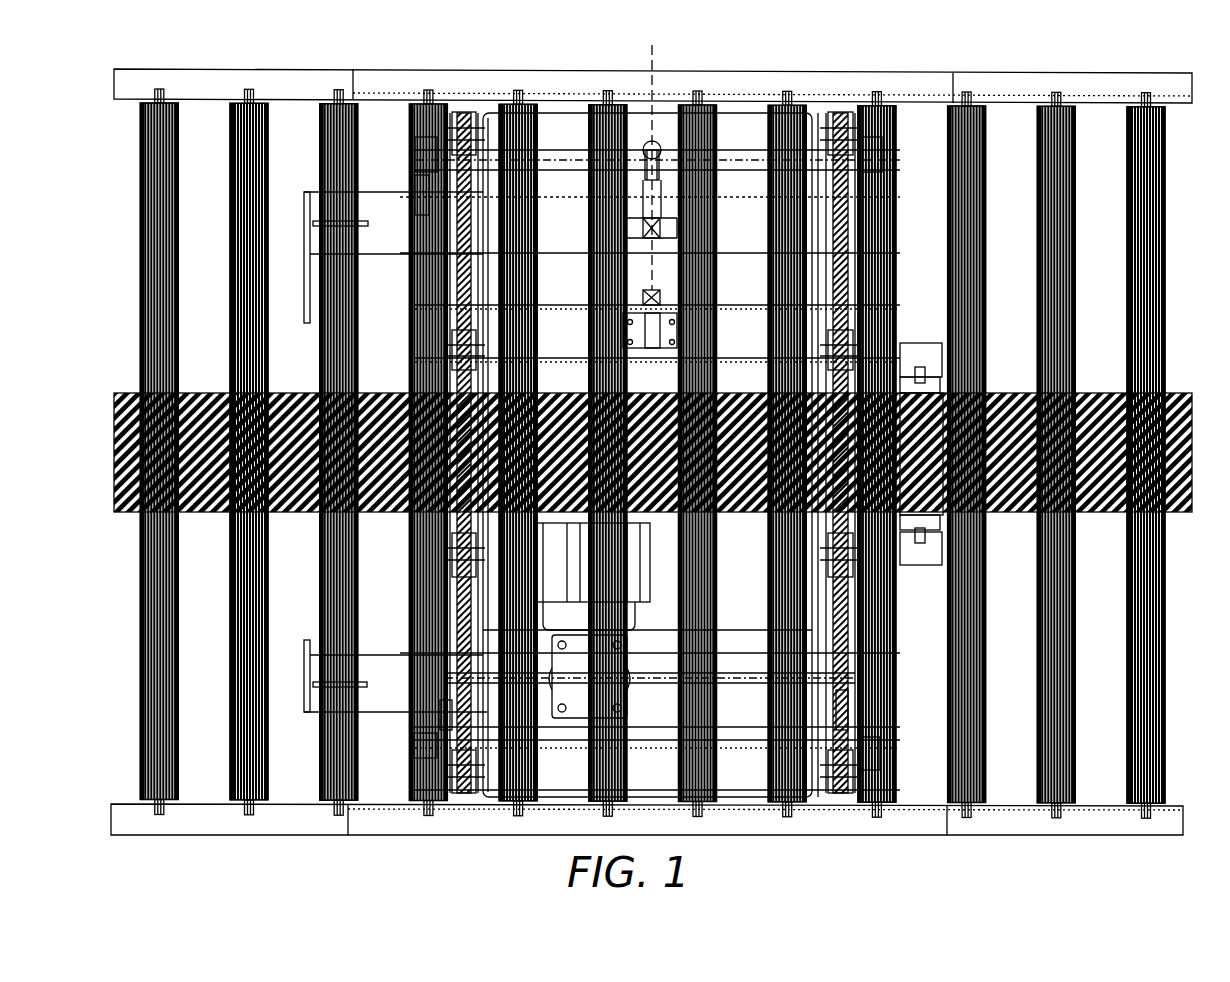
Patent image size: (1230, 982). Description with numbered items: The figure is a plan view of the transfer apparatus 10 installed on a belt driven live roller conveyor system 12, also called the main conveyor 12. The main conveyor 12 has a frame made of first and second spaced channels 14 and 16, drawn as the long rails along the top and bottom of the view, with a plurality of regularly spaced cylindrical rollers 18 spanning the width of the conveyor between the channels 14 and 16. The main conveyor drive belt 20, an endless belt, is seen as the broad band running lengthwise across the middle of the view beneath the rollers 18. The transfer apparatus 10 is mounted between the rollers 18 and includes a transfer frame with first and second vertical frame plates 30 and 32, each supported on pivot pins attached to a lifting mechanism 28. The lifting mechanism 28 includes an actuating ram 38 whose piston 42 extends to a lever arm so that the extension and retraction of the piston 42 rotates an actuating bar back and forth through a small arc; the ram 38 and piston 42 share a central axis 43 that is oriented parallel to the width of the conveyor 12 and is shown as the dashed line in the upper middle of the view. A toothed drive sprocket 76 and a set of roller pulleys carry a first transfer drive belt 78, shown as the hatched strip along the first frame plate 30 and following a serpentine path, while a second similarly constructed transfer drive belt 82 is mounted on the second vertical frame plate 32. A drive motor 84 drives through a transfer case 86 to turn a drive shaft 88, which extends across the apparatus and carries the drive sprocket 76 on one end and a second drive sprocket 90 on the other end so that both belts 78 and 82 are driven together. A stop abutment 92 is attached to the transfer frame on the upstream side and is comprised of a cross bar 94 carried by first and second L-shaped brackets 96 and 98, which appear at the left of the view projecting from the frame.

The transfer apparatus 10 is at (816, 113).
The belt driven live roller conveyor system 12 is at (655, 71).
The first channel 14 is at (1109, 70).
The second channel 16 is at (1088, 830).
The cylindrical rollers 18 is at (967, 107).
The main conveyor drive belt 20 is at (1173, 395).
The lifting mechanism 28 is at (709, 283).
The actuating ram 38 is at (665, 254).
The first vertical frame plate 30 is at (485, 258).
The second vertical frame plate 32 is at (818, 259).
The piston 42 is at (654, 197).
The central axis 43 is at (655, 51).
The toothed drive sprocket 76 is at (445, 707).
The first transfer drive belt 78 is at (458, 260).
The second transfer drive belt 82 is at (842, 235).
The drive motor 84 is at (637, 620).
The transfer case 86 is at (628, 655).
The drive shaft 88 is at (732, 677).
The second drive sprocket 90 is at (847, 692).
The stop abutment 92 is at (287, 362).
The cross bar 94 is at (306, 323).
The first L-shaped bracket 96 is at (370, 198).
The second L-shaped bracket 98 is at (360, 708).